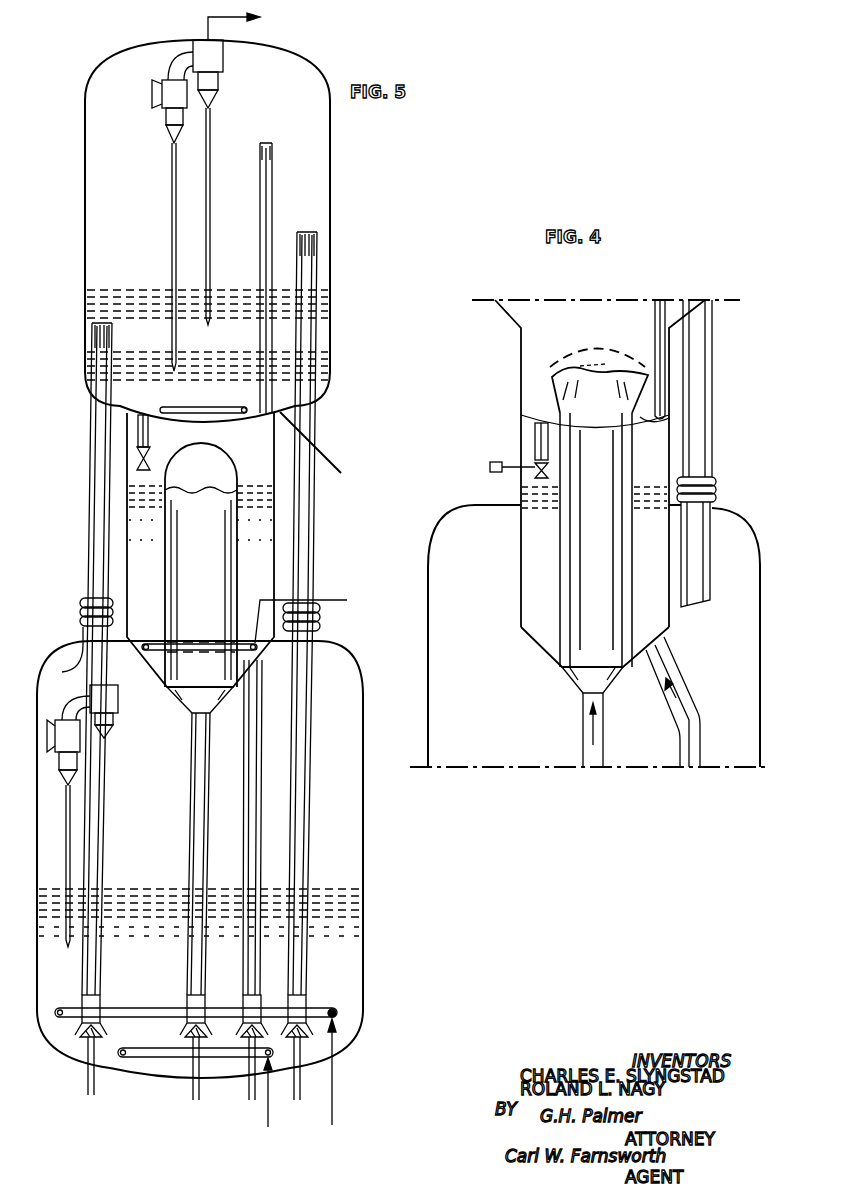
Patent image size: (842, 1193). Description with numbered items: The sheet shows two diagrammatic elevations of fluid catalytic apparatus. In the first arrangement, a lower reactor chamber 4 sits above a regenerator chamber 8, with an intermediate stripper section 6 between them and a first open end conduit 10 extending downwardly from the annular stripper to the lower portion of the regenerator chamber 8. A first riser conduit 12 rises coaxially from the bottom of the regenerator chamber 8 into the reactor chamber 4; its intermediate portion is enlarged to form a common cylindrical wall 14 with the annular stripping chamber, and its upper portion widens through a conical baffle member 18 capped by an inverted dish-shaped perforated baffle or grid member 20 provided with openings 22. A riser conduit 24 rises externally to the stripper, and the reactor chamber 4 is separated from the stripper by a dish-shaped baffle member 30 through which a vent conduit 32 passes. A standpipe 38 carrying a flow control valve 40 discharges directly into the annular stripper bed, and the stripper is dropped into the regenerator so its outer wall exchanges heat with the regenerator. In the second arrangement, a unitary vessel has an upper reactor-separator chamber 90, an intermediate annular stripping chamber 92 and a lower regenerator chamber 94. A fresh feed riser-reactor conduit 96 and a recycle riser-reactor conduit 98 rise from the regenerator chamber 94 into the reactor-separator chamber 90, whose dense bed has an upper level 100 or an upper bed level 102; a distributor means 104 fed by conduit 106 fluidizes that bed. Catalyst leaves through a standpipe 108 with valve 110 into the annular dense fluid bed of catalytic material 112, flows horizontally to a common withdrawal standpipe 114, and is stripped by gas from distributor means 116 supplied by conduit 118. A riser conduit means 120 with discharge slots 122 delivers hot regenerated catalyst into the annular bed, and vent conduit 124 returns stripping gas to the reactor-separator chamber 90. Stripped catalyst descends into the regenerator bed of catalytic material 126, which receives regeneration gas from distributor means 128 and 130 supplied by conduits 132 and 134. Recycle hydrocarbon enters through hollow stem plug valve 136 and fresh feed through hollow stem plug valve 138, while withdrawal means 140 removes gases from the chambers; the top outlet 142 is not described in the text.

In FIG. 4, the reactor chamber 4 is at (521, 359).
In FIG. 4, the intermediate vessel 6 is at (521, 564).
In FIG. 4, the regenerator chamber 8 is at (725, 528).
In FIG. 4, the first open end conduit 10 is at (700, 734).
In FIG. 4, the first riser conduit 12 is at (583, 730).
In FIG. 4, the common cylindrical wall 14 is at (627, 567).
In FIG. 4, the conical baffle member 18 is at (614, 397).
In FIG. 4, the inverted dish-shaped perforated baffle or grid member 20 is at (572, 357).
In FIG. 4, the openings 22 is at (608, 361).
In FIG. 4, the riser conduit 24 is at (711, 377).
In FIG. 4, the dish-shaped baffle member 30 is at (645, 425).
In FIG. 4, the open end vent conduit 32 is at (655, 314).
In FIG. 4, the standpipe 38 is at (535, 439).
In FIG. 4, the flow control valve 40 is at (535, 471).
In FIG. 5, the reactor-separator chamber 90 is at (330, 192).
In FIG. 5, the annular stripping chamber 92 is at (274, 531).
In FIG. 5, the regenerator chamber 94 is at (363, 849).
In FIG. 5, the fresh feed riser-reactor conduit 96 is at (313, 502).
In FIG. 5, the recycle riser-reactor conduit 98 is at (91, 490).
In FIG. 5, the upper level 100 is at (223, 359).
In FIG. 5, the upper bed level 102 is at (143, 297).
In FIG. 5, the distributor means 104 is at (201, 408).
In FIG. 5, the conduit 106 is at (327, 461).
In FIG. 5, the standpipe 108 is at (148, 433).
In FIG. 5, the valve 110 is at (158, 455).
In FIG. 5, the annular relatively dense fluid bed of catalytic material 112 is at (250, 488).
In FIG. 5, the withdrawal standpipe 114 is at (250, 773).
In FIG. 5, the distributor means 116 is at (147, 645).
In FIG. 5, the conduit 118 is at (327, 600).
In FIG. 5, the riser conduit means 120 is at (193, 787).
In FIG. 5, the discharge slots or passageways 122 is at (167, 476).
In FIG. 5, the vent conduit 124 is at (260, 182).
In FIG. 5, the relatively dense fluid bed of catalytic material 126 is at (141, 893).
In FIG. 5, the distributor means 128 is at (141, 1008).
In FIG. 5, the distributor means 130 is at (145, 1050).
In FIG. 5, the conduit 132 is at (336, 1086).
In FIG. 5, the conduit 134 is at (265, 1098).
In FIG. 5, the hollow stem plug valve 136 is at (87, 1077).
In FIG. 5, the hollow stem plug valve 138 is at (301, 1090).
In FIG. 5, the withdrawal means 140 is at (49, 620).
In FIG. 5, the outlet nozzle 142 is at (208, 17).